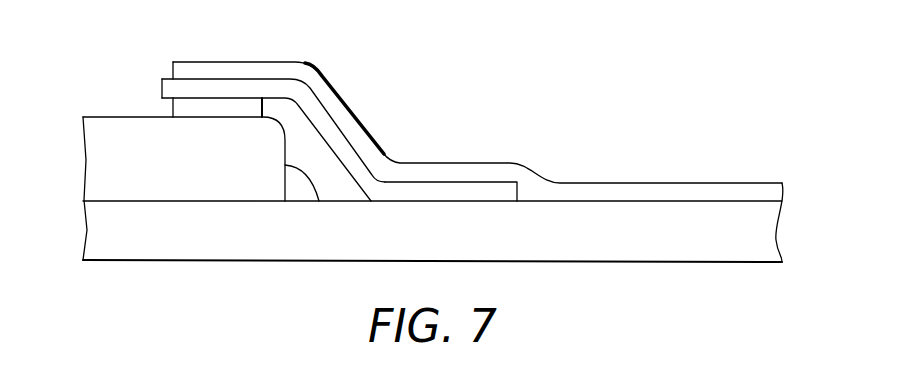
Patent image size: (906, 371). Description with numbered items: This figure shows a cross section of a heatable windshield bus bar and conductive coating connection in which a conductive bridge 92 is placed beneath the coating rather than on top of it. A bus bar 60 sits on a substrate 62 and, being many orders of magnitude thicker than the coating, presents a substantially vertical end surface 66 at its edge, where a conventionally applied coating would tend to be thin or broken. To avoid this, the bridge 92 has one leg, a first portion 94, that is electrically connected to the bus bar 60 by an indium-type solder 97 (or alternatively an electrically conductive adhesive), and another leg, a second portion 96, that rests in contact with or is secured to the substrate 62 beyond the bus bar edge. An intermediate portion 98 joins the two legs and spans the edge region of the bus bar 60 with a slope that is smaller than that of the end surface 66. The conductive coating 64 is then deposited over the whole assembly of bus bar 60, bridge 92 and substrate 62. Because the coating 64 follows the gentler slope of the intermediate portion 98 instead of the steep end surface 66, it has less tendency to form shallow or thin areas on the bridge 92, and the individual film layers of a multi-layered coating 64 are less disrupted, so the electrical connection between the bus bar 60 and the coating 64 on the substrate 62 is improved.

The bus bar 60 is at (103, 165).
The substrate 62 is at (170, 245).
The conductive coating 64 is at (268, 58).
The vertical end surface 66 is at (319, 201).
The bridge 92 is at (332, 117).
The first portion 94 is at (187, 87).
The second portion 96 is at (485, 190).
The indium-type solder 97 is at (182, 107).
The intermediate portion 98 is at (348, 152).